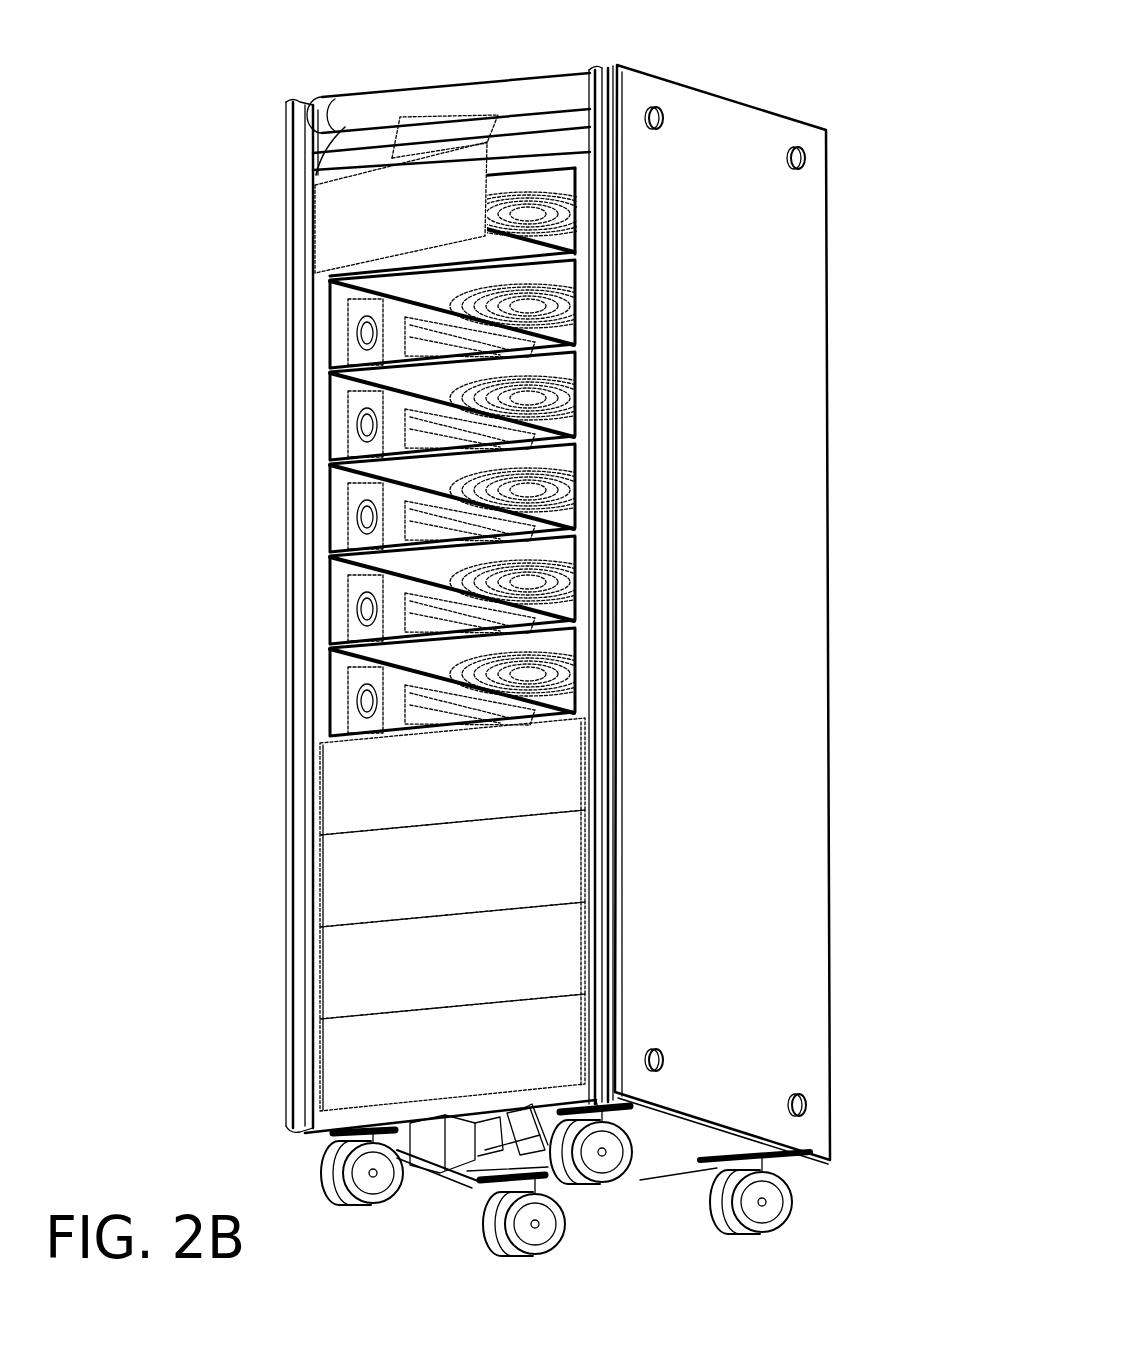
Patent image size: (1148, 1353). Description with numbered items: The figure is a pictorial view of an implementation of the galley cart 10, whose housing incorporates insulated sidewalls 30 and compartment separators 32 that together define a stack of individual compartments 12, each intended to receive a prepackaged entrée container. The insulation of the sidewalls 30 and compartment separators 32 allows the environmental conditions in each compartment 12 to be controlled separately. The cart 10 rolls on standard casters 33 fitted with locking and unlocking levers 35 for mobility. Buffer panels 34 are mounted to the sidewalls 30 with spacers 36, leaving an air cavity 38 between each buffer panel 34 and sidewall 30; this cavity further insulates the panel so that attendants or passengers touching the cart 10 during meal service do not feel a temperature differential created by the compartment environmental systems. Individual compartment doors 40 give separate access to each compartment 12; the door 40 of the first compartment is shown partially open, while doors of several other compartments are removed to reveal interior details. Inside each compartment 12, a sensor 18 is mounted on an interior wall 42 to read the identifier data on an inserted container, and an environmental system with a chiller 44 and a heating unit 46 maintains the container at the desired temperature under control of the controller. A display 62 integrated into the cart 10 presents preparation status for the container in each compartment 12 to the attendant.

The galley cart 10 is at (763, 65).
The compartment 12 is at (423, 292).
The sensor 18 is at (395, 323).
The sidewall 30 is at (395, 538).
The compartment separator 32 is at (503, 360).
The caster 33 is at (745, 1210).
The buffer panel 34 is at (715, 488).
The locking and unlocking lever 35 is at (463, 1183).
The spacer 36 is at (658, 115).
The air cavity 38 is at (302, 827).
The compartment door 40 is at (447, 207).
The interior wall 42 is at (365, 352).
The chiller 44 is at (440, 343).
The heating unit 46 is at (527, 293).
The display 62 is at (432, 132).